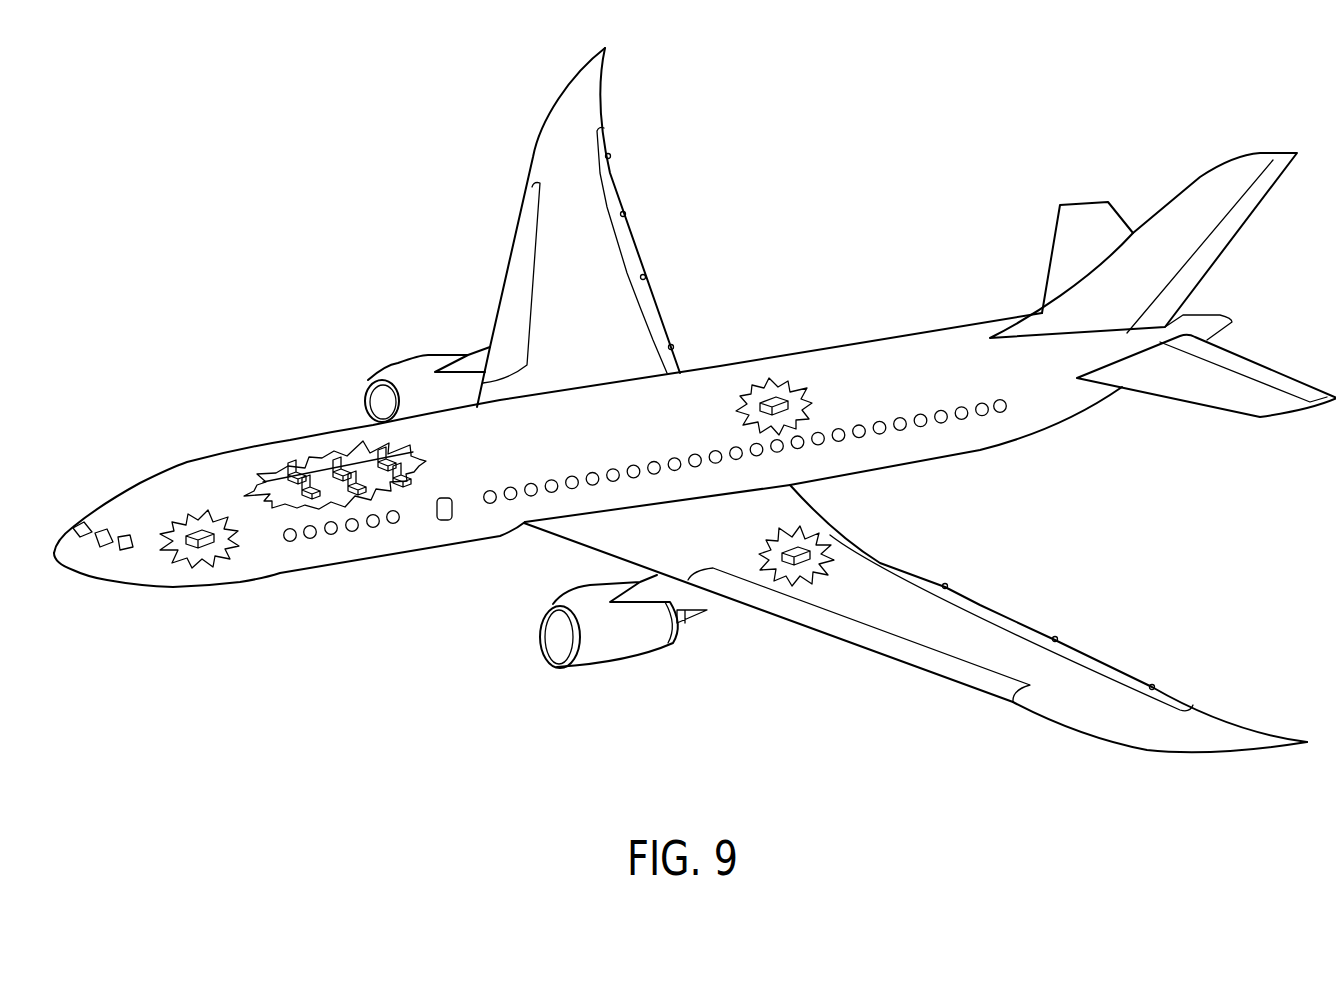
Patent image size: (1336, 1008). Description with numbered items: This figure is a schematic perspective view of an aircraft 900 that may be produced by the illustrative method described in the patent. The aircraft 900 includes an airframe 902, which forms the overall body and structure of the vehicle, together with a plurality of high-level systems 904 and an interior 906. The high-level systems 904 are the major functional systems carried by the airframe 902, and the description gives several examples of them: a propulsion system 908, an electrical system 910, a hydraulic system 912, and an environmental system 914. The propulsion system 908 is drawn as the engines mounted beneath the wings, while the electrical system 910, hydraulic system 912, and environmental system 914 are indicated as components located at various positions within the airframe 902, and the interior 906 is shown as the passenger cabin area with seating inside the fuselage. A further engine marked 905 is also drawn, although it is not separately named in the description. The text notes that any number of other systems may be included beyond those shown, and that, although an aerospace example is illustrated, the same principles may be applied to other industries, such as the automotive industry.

The aircraft 900 is at (204, 184).
The airframe 902 is at (325, 408).
The high-level systems 904 is at (897, 292).
The engine 905 is at (623, 642).
The interior 906 is at (292, 460).
The propulsion system 908 is at (408, 370).
The electrical system 910 is at (196, 510).
The hydraulic system 912 is at (808, 543).
The environmental system 914 is at (770, 395).